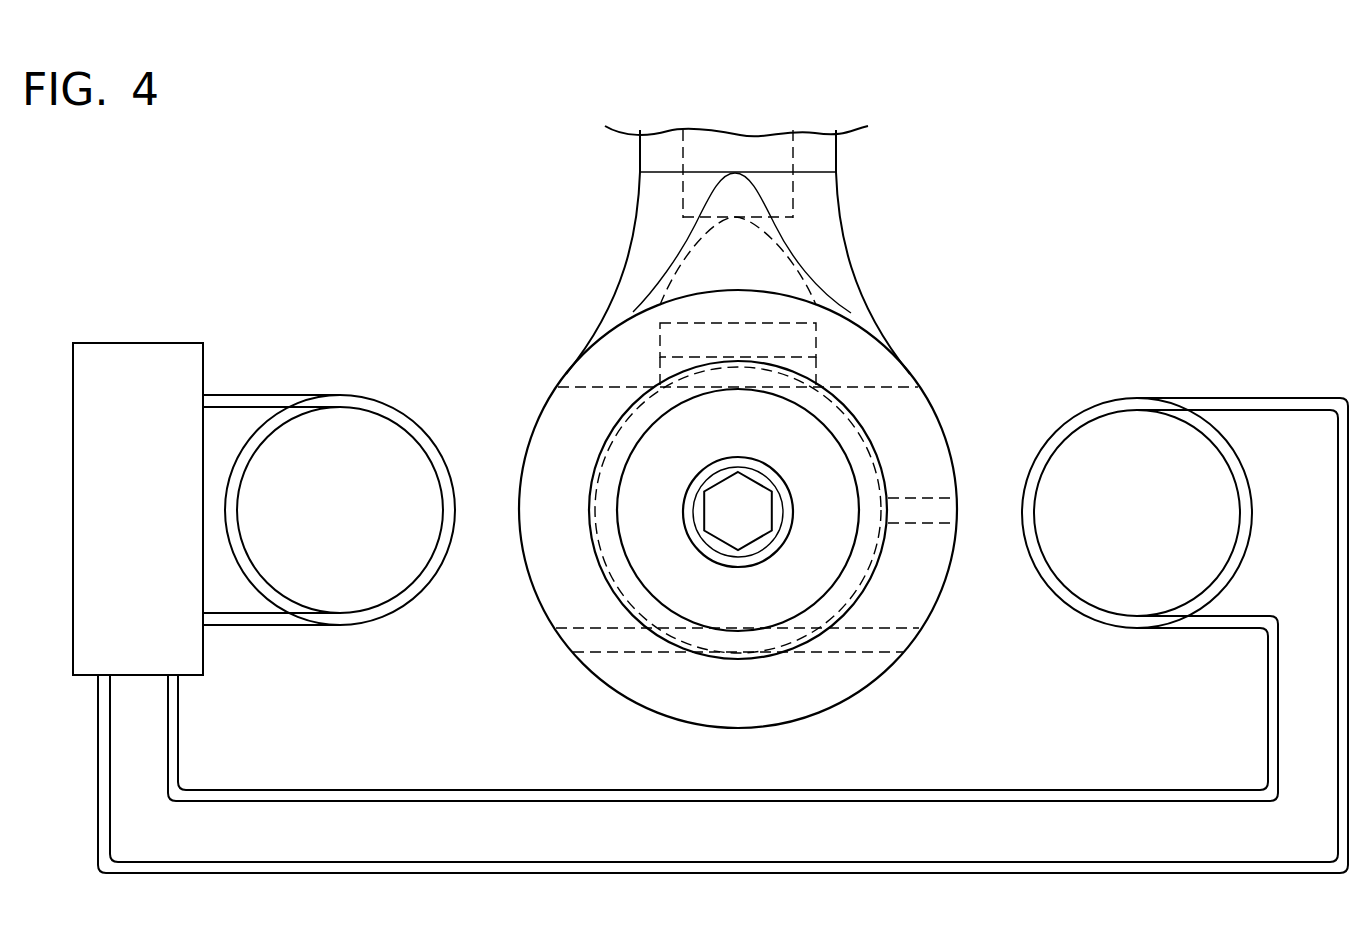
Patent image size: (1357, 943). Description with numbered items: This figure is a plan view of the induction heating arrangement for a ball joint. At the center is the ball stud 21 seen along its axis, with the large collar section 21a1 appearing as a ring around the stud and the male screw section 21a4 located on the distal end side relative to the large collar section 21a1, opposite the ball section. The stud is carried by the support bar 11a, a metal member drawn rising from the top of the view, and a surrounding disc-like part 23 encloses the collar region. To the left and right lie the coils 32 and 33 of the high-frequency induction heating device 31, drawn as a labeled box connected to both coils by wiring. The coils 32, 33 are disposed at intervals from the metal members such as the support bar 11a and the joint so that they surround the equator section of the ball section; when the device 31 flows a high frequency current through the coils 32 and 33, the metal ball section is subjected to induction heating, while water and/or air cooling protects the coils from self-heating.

The support bar 11a is at (793, 197).
The ball stud 21 is at (848, 450).
The large collar section 21a1 is at (858, 421).
The male screw section 21a4 is at (795, 567).
The flange portion 23 is at (925, 590).
The high-frequency induction heating device 31 is at (105, 342).
The coil 32 is at (386, 403).
The coil 33 is at (1205, 398).